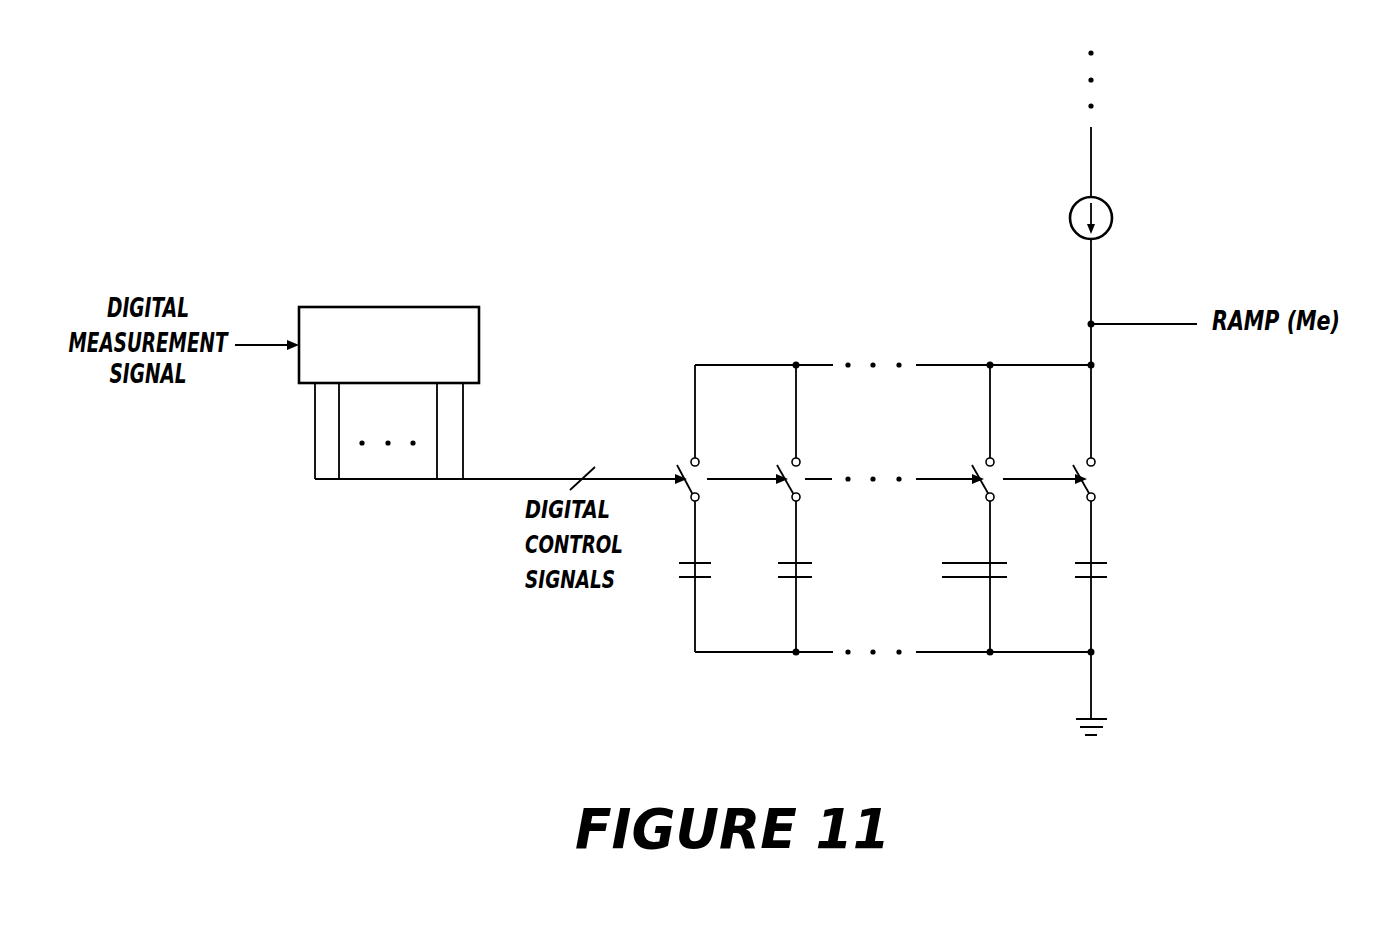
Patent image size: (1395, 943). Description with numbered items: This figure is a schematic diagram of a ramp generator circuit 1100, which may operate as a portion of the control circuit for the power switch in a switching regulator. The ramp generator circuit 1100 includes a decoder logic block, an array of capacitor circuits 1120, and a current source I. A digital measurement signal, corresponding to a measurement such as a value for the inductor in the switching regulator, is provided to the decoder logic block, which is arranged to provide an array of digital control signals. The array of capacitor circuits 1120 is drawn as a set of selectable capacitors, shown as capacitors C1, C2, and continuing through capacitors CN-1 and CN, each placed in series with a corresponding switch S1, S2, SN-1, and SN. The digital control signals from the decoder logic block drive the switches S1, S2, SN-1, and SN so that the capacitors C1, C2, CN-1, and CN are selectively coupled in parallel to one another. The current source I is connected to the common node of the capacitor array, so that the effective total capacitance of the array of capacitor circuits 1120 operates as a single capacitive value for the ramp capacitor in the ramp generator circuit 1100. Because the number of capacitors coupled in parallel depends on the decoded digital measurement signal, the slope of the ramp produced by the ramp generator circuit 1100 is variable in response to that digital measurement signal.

The ramp generator circuit 1100 is at (373, 307).
The array of capacitor circuits 1120 is at (972, 509).
The switch N SN is at (711, 465).
The switch N-1 SN-1 is at (819, 465).
The switch 2 S2 is at (1006, 465).
The switch 1 S1 is at (1105, 465).
The capacitor N CN is at (716, 566).
The capacitor N-1 CN-1 is at (826, 568).
The capacitor 2 C2 is at (994, 566).
The capacitor 1 C1 is at (1109, 566).
The current source I is at (1106, 216).